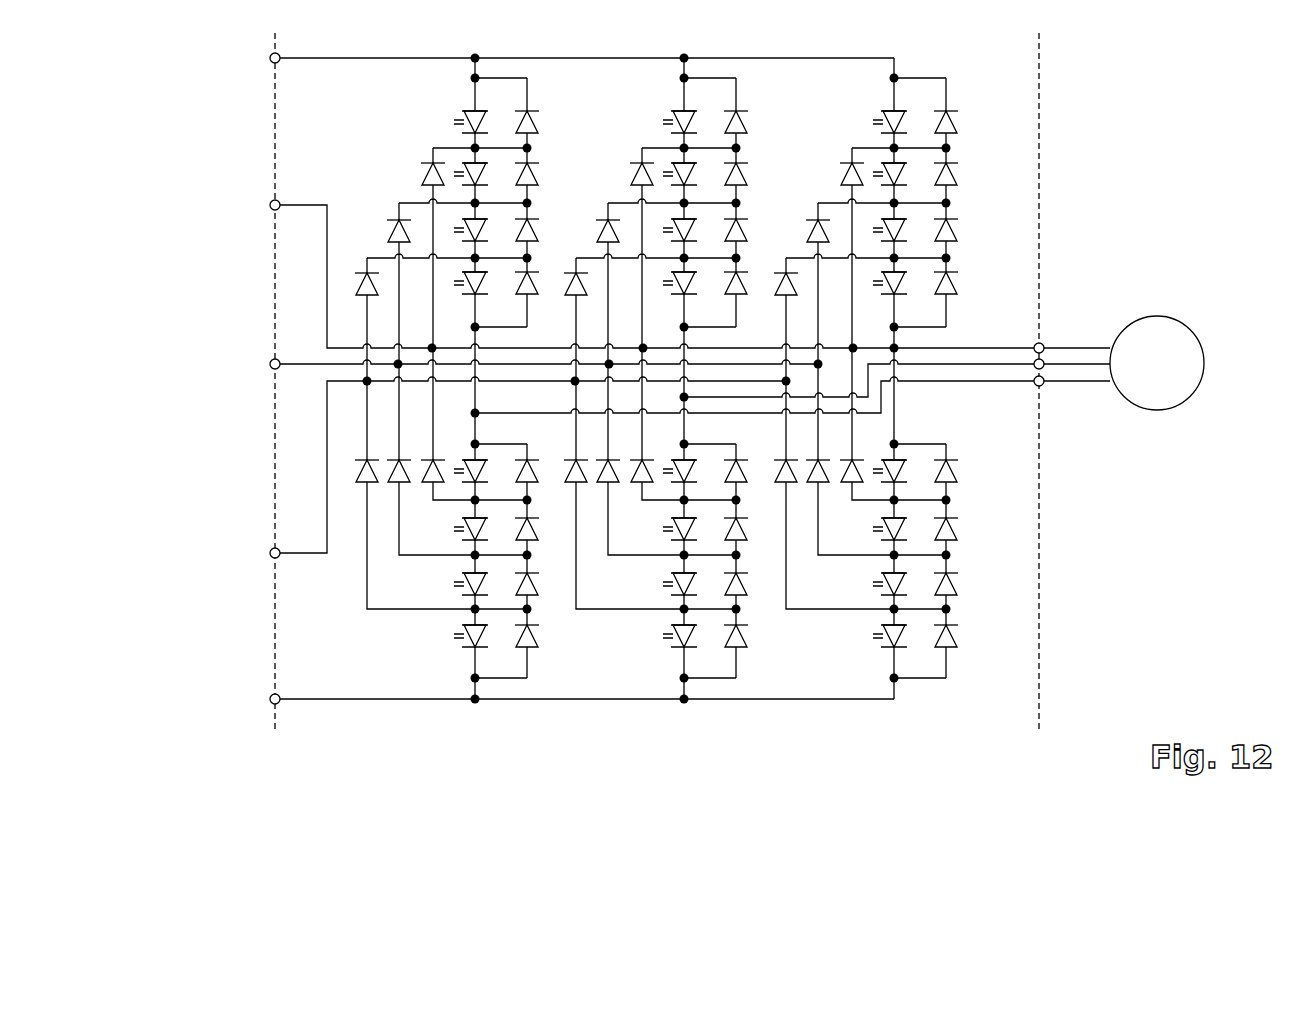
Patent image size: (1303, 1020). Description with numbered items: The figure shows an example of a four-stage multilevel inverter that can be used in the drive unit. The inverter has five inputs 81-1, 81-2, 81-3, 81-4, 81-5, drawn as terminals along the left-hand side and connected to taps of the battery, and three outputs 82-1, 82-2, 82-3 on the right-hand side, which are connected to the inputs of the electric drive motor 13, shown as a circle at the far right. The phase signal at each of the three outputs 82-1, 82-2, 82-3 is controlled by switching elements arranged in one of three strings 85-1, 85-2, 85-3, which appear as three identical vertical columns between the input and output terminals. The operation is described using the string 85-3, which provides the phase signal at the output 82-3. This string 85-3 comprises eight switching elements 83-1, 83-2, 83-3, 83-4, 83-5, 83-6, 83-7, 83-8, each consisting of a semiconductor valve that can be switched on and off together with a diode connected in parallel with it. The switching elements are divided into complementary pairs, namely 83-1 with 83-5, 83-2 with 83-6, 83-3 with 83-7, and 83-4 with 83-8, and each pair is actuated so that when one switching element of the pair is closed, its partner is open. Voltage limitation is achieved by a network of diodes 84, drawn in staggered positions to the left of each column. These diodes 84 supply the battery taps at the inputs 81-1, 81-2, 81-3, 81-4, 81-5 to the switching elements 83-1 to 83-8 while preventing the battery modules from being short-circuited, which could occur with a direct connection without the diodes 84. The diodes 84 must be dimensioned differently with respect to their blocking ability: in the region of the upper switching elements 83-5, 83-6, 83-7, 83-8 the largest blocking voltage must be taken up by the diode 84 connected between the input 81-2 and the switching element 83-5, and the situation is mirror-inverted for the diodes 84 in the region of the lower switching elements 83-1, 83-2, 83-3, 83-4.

The electric drive motor 13 is at (1157, 411).
The input 81-1 is at (269, 699).
The input 81-2 is at (269, 553).
The input 81-3 is at (269, 364).
The input 81-4 is at (269, 205).
The input 81-5 is at (269, 58).
The output 82-1 is at (1042, 386).
The output 82-2 is at (1042, 360).
The output 82-3 is at (1042, 344).
The switching element 83-1 is at (957, 636).
The switching element 83-2 is at (957, 584).
The switching element 83-3 is at (957, 529).
The switching element 83-4 is at (957, 471).
The switching element 83-5 is at (957, 283).
The switching element 83-6 is at (957, 230).
The switching element 83-7 is at (957, 174).
The switching element 83-8 is at (957, 122).
The diode 84 is at (846, 174).
The string 85-1 is at (694, 396).
The string 85-2 is at (799, 396).
The string 85-3 is at (899, 396).